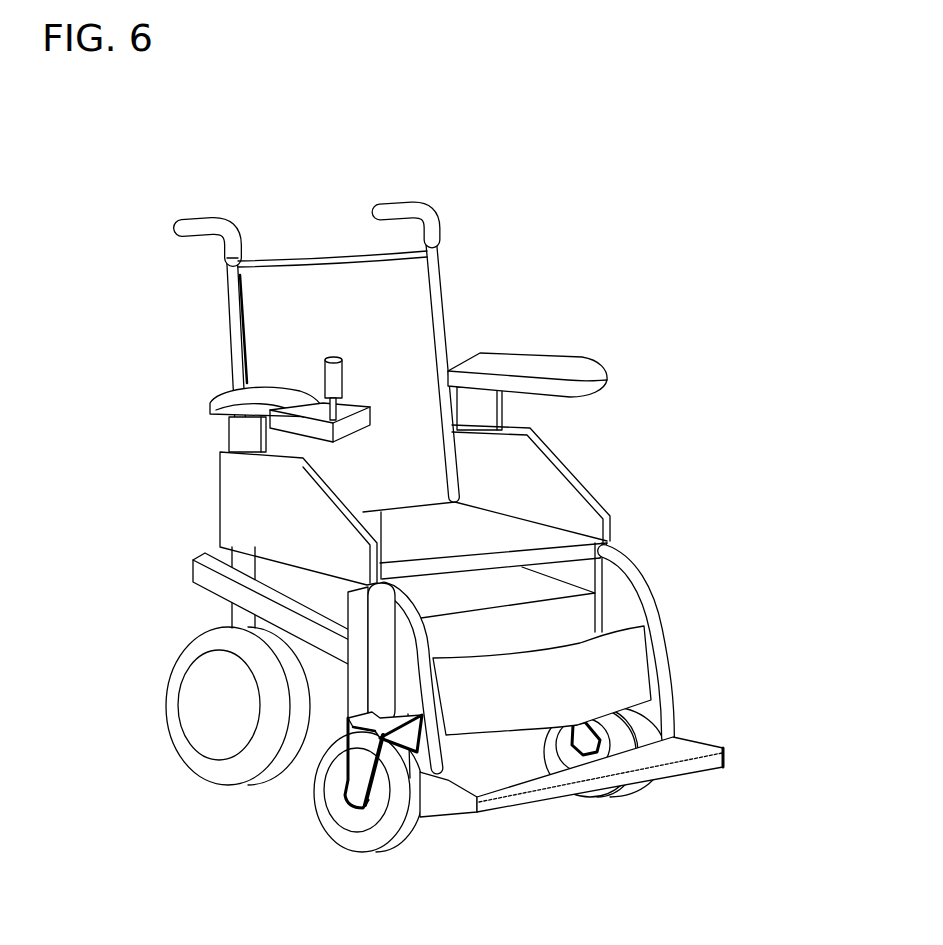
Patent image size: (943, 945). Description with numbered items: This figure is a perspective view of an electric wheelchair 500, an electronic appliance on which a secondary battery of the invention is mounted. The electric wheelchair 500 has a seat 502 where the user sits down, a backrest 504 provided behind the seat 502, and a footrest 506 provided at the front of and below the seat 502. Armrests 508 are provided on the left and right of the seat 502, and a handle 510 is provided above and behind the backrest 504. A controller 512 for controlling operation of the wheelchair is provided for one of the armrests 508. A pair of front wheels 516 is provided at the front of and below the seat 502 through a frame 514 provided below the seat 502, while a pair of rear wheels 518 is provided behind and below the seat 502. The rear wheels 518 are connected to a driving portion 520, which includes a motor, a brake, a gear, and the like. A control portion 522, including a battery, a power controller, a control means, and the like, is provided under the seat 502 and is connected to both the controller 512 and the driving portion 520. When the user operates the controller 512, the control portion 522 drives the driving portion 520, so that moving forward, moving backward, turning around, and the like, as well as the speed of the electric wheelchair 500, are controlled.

The electric wheelchair 500 is at (285, 127).
The seat 502 is at (523, 538).
The backrest 504 is at (390, 356).
The footrest 506 is at (533, 787).
The armrests 508 is at (562, 378).
The handle 510 is at (407, 210).
The controller 512 is at (333, 377).
The frame 514 is at (610, 608).
The front wheels 516 is at (367, 817).
The rear wheels 518 is at (217, 730).
The driving portion 520 is at (332, 703).
The control portion 522 is at (610, 627).